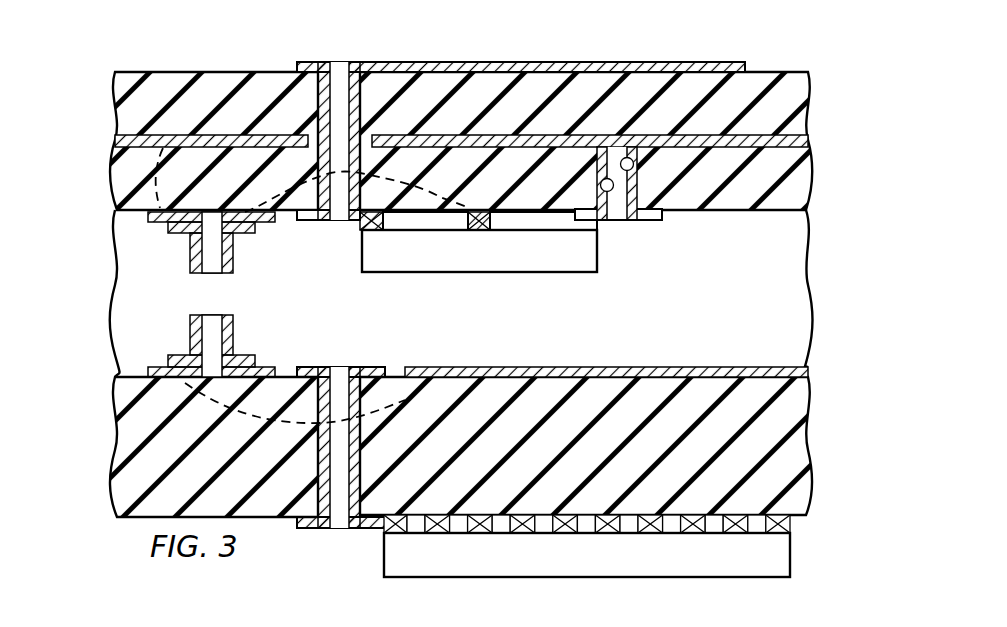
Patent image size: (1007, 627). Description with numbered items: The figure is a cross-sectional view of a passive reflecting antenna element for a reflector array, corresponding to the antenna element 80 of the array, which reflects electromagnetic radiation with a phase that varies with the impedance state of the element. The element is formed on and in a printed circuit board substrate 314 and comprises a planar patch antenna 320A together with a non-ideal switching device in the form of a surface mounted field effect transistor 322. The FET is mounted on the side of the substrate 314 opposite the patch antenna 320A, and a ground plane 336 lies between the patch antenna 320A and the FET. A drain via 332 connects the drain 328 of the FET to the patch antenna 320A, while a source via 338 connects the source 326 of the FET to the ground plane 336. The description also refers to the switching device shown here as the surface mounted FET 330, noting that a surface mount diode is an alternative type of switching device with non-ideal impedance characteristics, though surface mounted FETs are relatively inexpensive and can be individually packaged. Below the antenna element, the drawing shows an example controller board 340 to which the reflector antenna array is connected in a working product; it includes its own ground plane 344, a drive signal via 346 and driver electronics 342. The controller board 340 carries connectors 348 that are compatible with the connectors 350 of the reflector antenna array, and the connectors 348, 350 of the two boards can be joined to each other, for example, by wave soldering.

The antenna element 80 is at (86, 401).
The printed circuit board substrate 314 is at (113, 92).
The patch antenna 320A is at (313, 62).
The surface mounted field effect transistor 322 is at (362, 256).
The source 326 is at (597, 220).
The drain 328 is at (362, 224).
The surface mounted FET 330 is at (493, 224).
The drain via 332 is at (318, 92).
The ground plane 336 is at (115, 140).
The source via 338 is at (600, 185).
The controller board 340 is at (690, 349).
The driver electronics 342 is at (790, 552).
The ground plane 344 is at (812, 368).
The drive signal via 346 is at (331, 373).
The connectors 348 is at (190, 340).
The connectors 350 is at (190, 256).